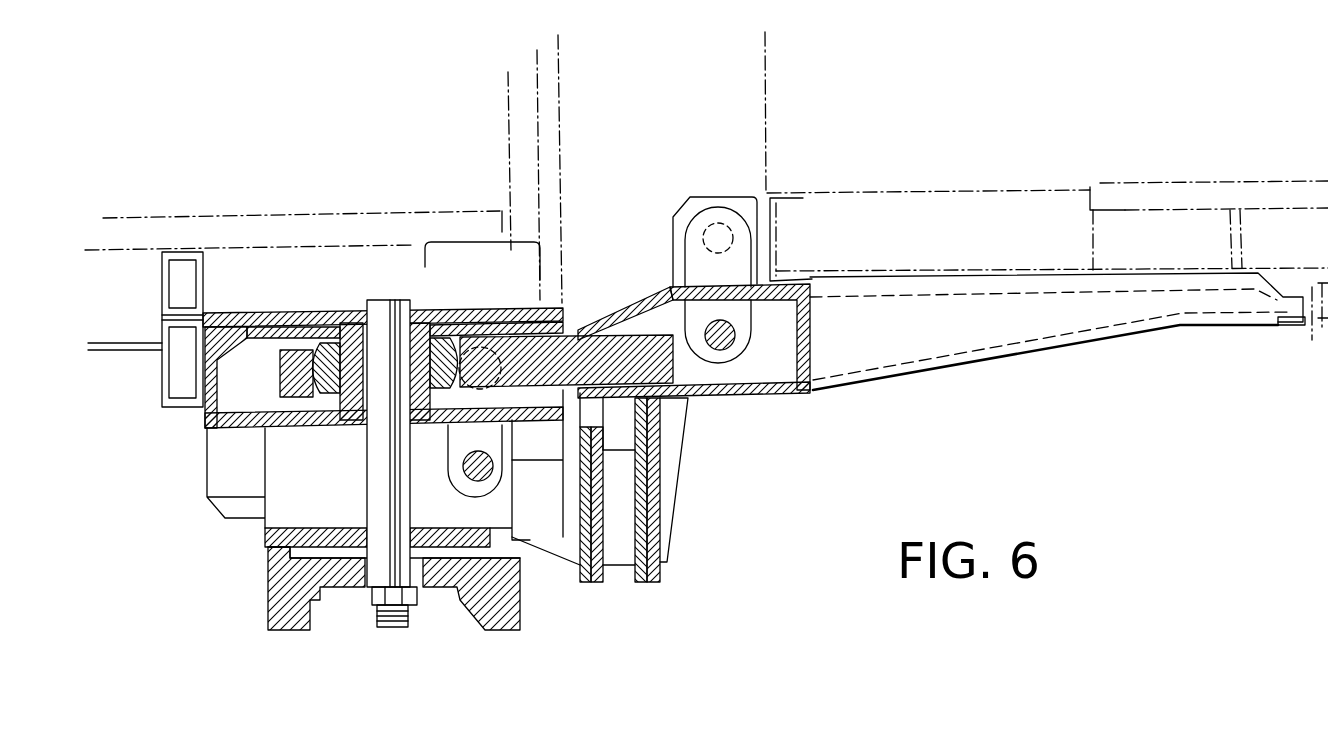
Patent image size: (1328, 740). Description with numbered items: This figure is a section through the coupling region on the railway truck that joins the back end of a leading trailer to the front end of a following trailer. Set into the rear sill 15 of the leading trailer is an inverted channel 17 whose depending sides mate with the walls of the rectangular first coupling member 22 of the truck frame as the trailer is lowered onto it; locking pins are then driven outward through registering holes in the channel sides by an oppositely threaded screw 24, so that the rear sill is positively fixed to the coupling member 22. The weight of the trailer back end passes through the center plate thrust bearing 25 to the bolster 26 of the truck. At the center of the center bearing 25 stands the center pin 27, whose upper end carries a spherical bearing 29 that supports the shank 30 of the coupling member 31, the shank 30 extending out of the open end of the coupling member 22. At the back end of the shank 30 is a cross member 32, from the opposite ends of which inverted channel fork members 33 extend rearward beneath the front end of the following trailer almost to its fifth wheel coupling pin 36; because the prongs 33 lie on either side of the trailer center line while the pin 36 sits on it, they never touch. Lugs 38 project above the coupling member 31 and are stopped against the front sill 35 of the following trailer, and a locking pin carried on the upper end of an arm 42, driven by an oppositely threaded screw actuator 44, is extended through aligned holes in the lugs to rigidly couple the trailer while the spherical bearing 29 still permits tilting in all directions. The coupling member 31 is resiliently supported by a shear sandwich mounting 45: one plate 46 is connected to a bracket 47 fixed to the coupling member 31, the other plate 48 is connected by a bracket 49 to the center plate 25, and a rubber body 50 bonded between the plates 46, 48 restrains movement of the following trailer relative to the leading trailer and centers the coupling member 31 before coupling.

The rear sill 15 is at (536, 280).
The inverted channel 17 is at (488, 308).
The first coupling member 22 is at (301, 430).
The oppositely threaded screw 24 is at (470, 474).
The center plate thrust bearing 25 is at (341, 587).
The bolster 26 is at (478, 593).
The center pin 27 is at (367, 458).
The spherical bearing 29 is at (352, 322).
The shank 30 is at (572, 340).
The coupling member 31 is at (613, 316).
The cross member 32 is at (766, 394).
The fork members 33 is at (1004, 340).
The front sill 35 is at (800, 194).
The fifth wheel coupling pin 36 is at (1312, 340).
The lugs 38 is at (737, 196).
The arm 42 is at (705, 238).
The oppositely threaded screw actuator 44 is at (735, 340).
The shear sandwich mounting 45 is at (627, 568).
The plate 46 is at (660, 592).
The bracket 47 is at (668, 478).
The plate 48 is at (598, 584).
The bracket 49 is at (560, 565).
The rubber body 50 is at (622, 448).